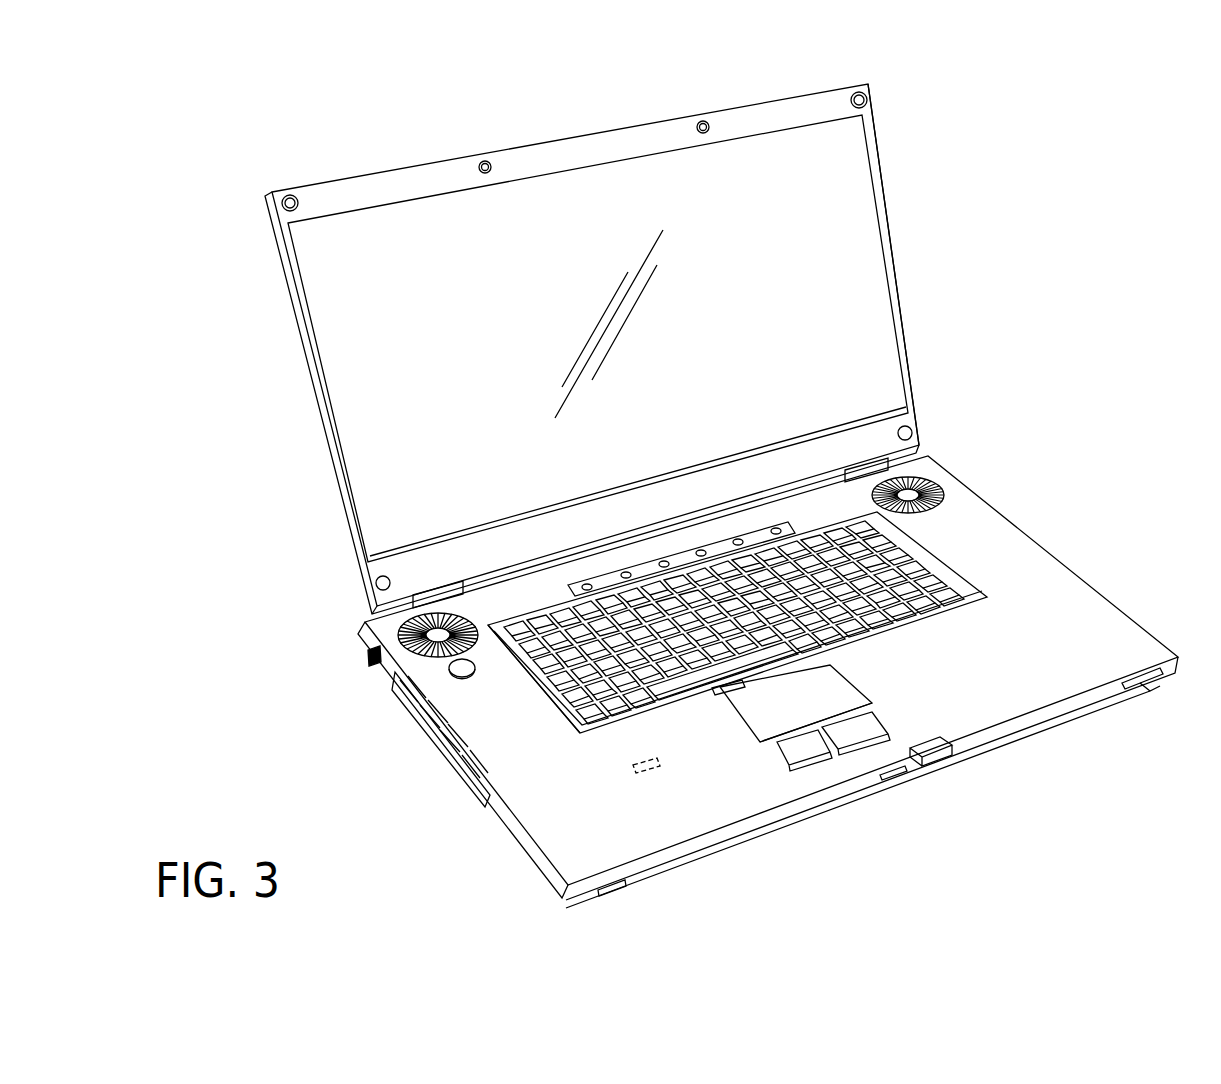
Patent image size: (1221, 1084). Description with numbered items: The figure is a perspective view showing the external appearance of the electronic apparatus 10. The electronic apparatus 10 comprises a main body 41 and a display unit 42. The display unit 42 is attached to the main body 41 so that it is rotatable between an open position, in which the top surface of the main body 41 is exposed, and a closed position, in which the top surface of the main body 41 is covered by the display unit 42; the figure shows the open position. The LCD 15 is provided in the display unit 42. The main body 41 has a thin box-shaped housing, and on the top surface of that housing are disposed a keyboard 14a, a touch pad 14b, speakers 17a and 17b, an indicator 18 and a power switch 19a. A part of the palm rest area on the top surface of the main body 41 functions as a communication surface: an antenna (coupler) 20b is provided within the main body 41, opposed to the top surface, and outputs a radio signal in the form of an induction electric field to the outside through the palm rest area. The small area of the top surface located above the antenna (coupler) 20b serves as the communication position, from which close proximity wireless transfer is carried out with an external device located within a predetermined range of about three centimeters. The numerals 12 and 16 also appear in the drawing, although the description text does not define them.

The electronic apparatus 10 is at (1022, 474).
The display unit 12 is at (318, 429).
The keyboard 14a is at (602, 706).
The touch pad 14b is at (773, 703).
The LCD 15 is at (408, 236).
The keyboard 16 is at (737, 622).
The speaker 17a is at (398, 633).
The speaker 17b is at (935, 491).
The indicator 18 is at (722, 693).
The power switch 19a is at (449, 669).
The antenna (coupler) 20b is at (646, 776).
The main body 41 is at (1140, 622).
The display unit 42 is at (905, 336).